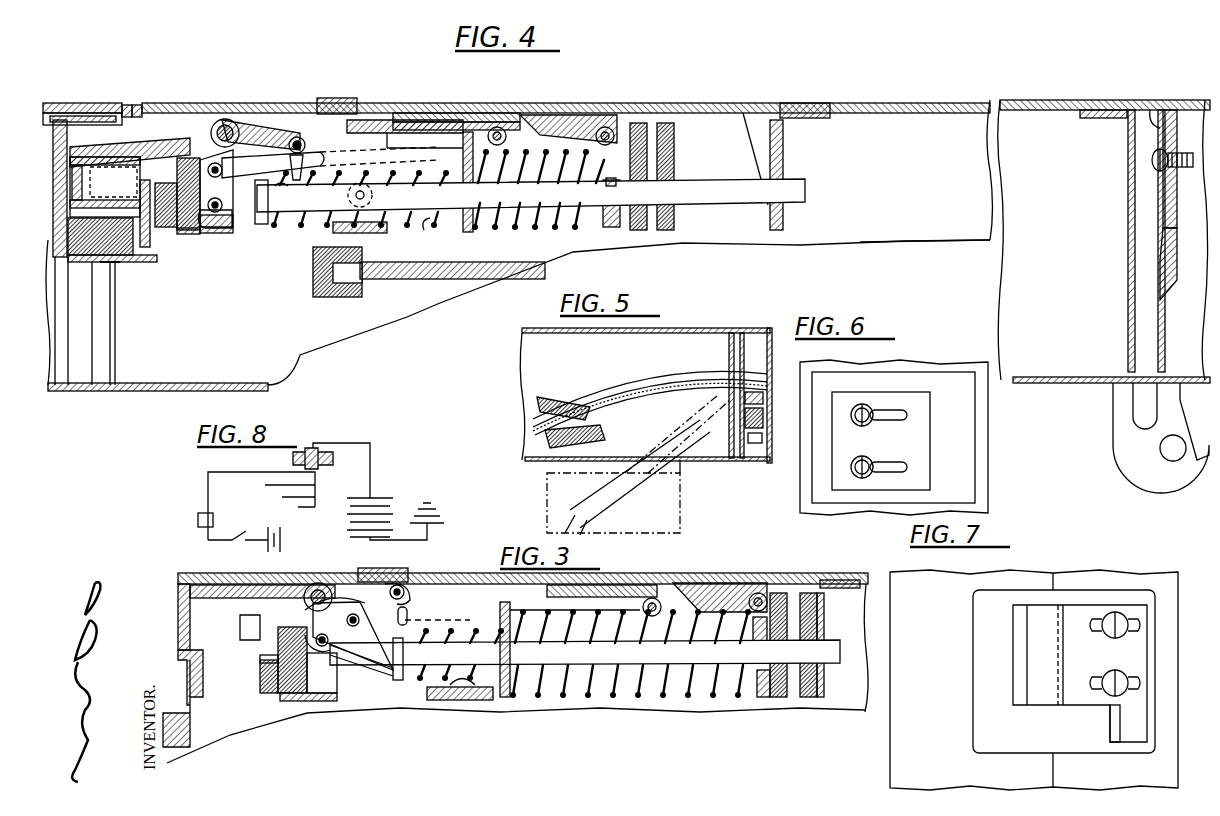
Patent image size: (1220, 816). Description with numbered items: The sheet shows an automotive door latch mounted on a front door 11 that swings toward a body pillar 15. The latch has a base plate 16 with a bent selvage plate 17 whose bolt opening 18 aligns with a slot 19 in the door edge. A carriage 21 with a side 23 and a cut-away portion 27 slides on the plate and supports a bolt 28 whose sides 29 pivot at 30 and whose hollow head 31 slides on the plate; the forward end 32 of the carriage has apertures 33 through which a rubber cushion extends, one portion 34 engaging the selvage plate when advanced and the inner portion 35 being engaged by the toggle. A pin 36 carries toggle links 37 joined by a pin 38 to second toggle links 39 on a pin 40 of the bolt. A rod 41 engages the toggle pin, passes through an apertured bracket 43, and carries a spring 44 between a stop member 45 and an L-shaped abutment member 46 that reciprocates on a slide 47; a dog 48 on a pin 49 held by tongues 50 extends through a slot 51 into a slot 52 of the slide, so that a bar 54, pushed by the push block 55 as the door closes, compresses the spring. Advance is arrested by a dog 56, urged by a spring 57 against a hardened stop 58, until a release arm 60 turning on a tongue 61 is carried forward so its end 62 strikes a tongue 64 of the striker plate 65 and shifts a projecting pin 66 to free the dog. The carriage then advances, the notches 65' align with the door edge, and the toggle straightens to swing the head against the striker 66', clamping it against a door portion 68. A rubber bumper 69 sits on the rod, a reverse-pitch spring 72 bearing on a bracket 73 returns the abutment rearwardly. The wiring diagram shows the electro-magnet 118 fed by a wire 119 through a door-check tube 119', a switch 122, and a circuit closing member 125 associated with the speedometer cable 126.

In FIG. 4, the front door 11 is at (902, 240).
In FIG. 3, the front door 11 is at (865, 600).
In FIG. 4, the body pillar 15 is at (62, 104).
In FIG. 7, the body pillar 15 is at (1076, 573).
In FIG. 4, the base plate 16 is at (740, 108).
In FIG. 3, the base plate 16 is at (478, 580).
In FIG. 4, the selvage plate 17 is at (147, 226).
In FIG. 3, the selvage plate 17 is at (192, 680).
In FIG. 4, the bolt opening 18 is at (150, 112).
In FIG. 4, the door edge slot 19 is at (126, 112).
In FIG. 4, the carriage 21 is at (385, 232).
In FIG. 3, the carriage 21 is at (445, 702).
In FIG. 4, the carriage side 23 is at (232, 233).
In FIG. 4, the cut-away portion 27 is at (322, 160).
In FIG. 3, the cut-away portion 27 is at (337, 683).
In FIG. 4, the bolt 28 is at (178, 140).
In FIG. 3, the bolt sides 29 is at (370, 670).
In FIG. 4, the bolt pivot 30 is at (362, 183).
In FIG. 3, the bolt pivot 30 is at (463, 700).
In FIG. 4, the bolt head 31 is at (66, 160).
In FIG. 3, the bolt head 31 is at (178, 620).
In FIG. 4, the carriage forward end 32 is at (180, 232).
In FIG. 3, the carriage forward end 32 is at (262, 658).
In FIG. 3, the apertures 33 is at (280, 697).
In FIG. 4, the cushion portion 34 is at (165, 232).
In FIG. 3, the cushion portion 34 is at (262, 690).
In FIG. 4, the inner cushion portion 35 is at (190, 232).
In FIG. 3, the inner cushion portion 35 is at (308, 680).
In FIG. 4, the outer toggle pin 36 is at (225, 120).
In FIG. 3, the outer toggle pin 36 is at (316, 583).
In FIG. 4, the toggle links 37 is at (205, 150).
In FIG. 3, the toggle links 37 is at (340, 600).
In FIG. 4, the toggle pin 38 is at (222, 165).
In FIG. 3, the toggle pin 38 is at (356, 627).
In FIG. 4, the second toggle links 39 is at (205, 226).
In FIG. 3, the second toggle links 39 is at (312, 630).
In FIG. 4, the bolt pin 40 is at (215, 212).
In FIG. 3, the bolt pin 40 is at (330, 645).
In FIG. 4, the rod 41 is at (803, 197).
In FIG. 3, the rod 41 is at (832, 650).
In FIG. 4, the apertured bracket 43 is at (778, 232).
In FIG. 3, the apertured bracket 43 is at (818, 690).
In FIG. 4, the spring 44 is at (424, 230).
In FIG. 3, the spring 44 is at (470, 640).
In FIG. 4, the stop member 45 is at (263, 224).
In FIG. 3, the stop member 45 is at (396, 680).
In FIG. 4, the abutment member 46 is at (612, 228).
In FIG. 3, the abutment member 46 is at (760, 696).
In FIG. 4, the slide 47 is at (790, 120).
In FIG. 3, the slide 47 is at (838, 580).
In FIG. 4, the dog 48 is at (575, 118).
In FIG. 3, the dog 48 is at (700, 585).
In FIG. 4, the dog pin 49 is at (605, 128).
In FIG. 3, the dog pin 49 is at (755, 595).
In FIG. 4, the tongues 50 is at (612, 186).
In FIG. 3, the tongues 50 is at (752, 620).
In FIG. 4, the abutment slot 51 is at (515, 120).
In FIG. 4, the slide slot 52 is at (500, 114).
In FIG. 4, the bar 54 is at (1054, 100).
In FIG. 4, the push block 55 is at (1170, 104).
In FIG. 6, the push block 55 is at (922, 437).
In FIG. 4, the dog 56 is at (297, 138).
In FIG. 3, the dog 56 is at (400, 585).
In FIG. 4, the dog spring 57 is at (272, 138).
In FIG. 4, the hardened stop 58 is at (335, 100).
In FIG. 3, the hardened stop 58 is at (378, 570).
In FIG. 4, the release arm 60 is at (410, 148).
In FIG. 3, the release arm 60 is at (583, 608).
In FIG. 4, the tongue 61 is at (504, 136).
In FIG. 3, the tongue 61 is at (661, 610).
In FIG. 4, the arm forward end 62 is at (112, 157).
In FIG. 4, the striker plate tongue 64 is at (97, 158).
In FIG. 7, the striker plate tongue 64 is at (1130, 742).
In FIG. 4, the striker plate 65 is at (83, 105).
In FIG. 7, the striker plate 65 is at (1108, 673).
In FIG. 4, the notches 65' is at (113, 182).
In FIG. 3, the notches 65' is at (254, 633).
In FIG. 4, the projecting pin 66 is at (286, 194).
In FIG. 3, the projecting pin 66 is at (417, 609).
In FIG. 4, the striker 66' is at (119, 274).
In FIG. 7, the striker 66' is at (1061, 664).
In FIG. 4, the door portion 68 is at (120, 255).
In FIG. 4, the bumper 69 is at (650, 232).
In FIG. 3, the bumper 69 is at (793, 645).
In FIG. 4, the return spring 72 is at (545, 228).
In FIG. 3, the return spring 72 is at (553, 690).
In FIG. 4, the apertured bracket 73 is at (466, 232).
In FIG. 3, the apertured bracket 73 is at (505, 700).
In FIG. 8, the electro-magnet 118 is at (198, 520).
In FIG. 5, the wire 119 is at (650, 403).
In FIG. 8, the wire 119 is at (245, 506).
In FIG. 5, the tube 119' is at (650, 391).
In FIG. 8, the switch 122 is at (237, 533).
In FIG. 8, the circuit closing member 125 is at (318, 465).
In FIG. 8, the speedometer cable 126 is at (333, 457).